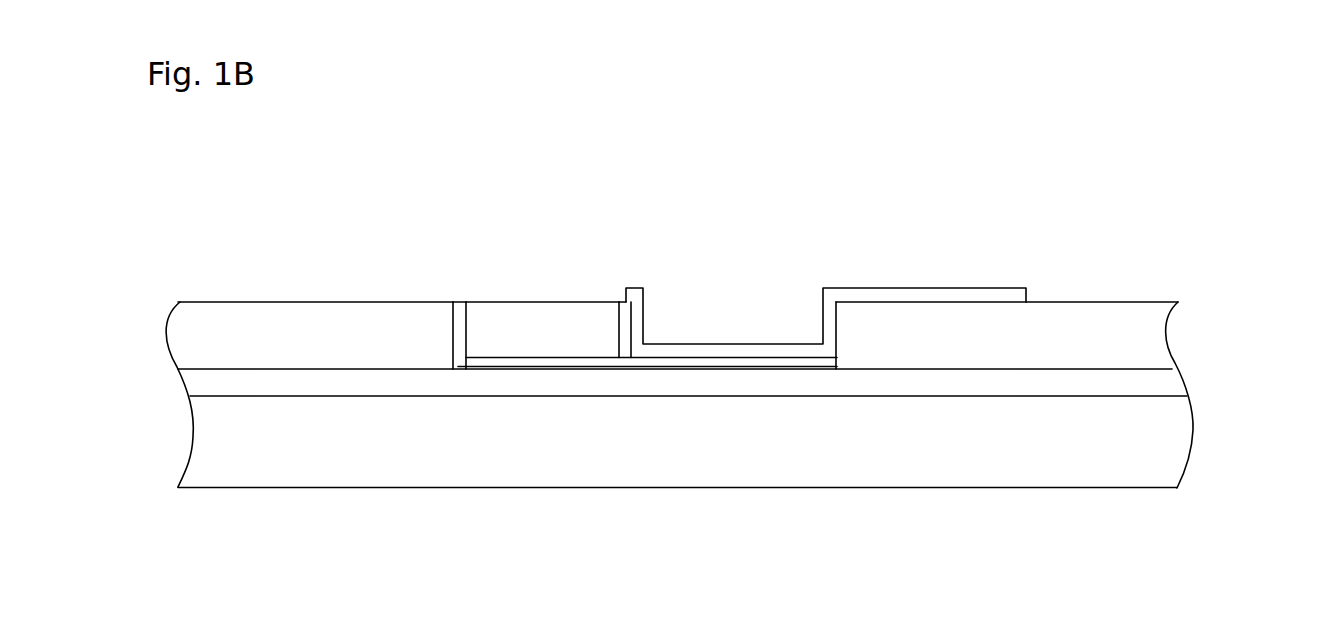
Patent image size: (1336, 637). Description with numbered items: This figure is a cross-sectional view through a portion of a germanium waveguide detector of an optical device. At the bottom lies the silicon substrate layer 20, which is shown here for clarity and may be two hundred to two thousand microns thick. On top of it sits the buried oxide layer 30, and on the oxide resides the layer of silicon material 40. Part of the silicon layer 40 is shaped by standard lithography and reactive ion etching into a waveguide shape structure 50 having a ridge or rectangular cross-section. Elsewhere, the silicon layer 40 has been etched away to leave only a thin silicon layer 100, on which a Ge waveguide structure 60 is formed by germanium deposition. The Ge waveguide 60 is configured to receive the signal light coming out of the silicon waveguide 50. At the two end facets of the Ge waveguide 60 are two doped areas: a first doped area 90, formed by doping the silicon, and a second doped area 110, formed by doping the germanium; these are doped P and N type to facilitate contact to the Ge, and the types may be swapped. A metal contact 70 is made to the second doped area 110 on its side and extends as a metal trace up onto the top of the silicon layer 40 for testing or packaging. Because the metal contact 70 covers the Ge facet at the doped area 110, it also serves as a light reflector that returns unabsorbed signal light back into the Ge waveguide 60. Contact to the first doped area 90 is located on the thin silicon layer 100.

The silicon substrate layer 20 is at (1162, 442).
The buried oxide layer 30 is at (1156, 379).
The layer of silicon material 40 is at (1156, 319).
The waveguide shape structure 50 is at (202, 335).
The Ge waveguide structure 60 is at (563, 323).
The metal contact 70 is at (904, 297).
The first doped area 90 is at (457, 333).
The thin silicon layer 100 is at (507, 358).
The second doped area 110 is at (623, 313).